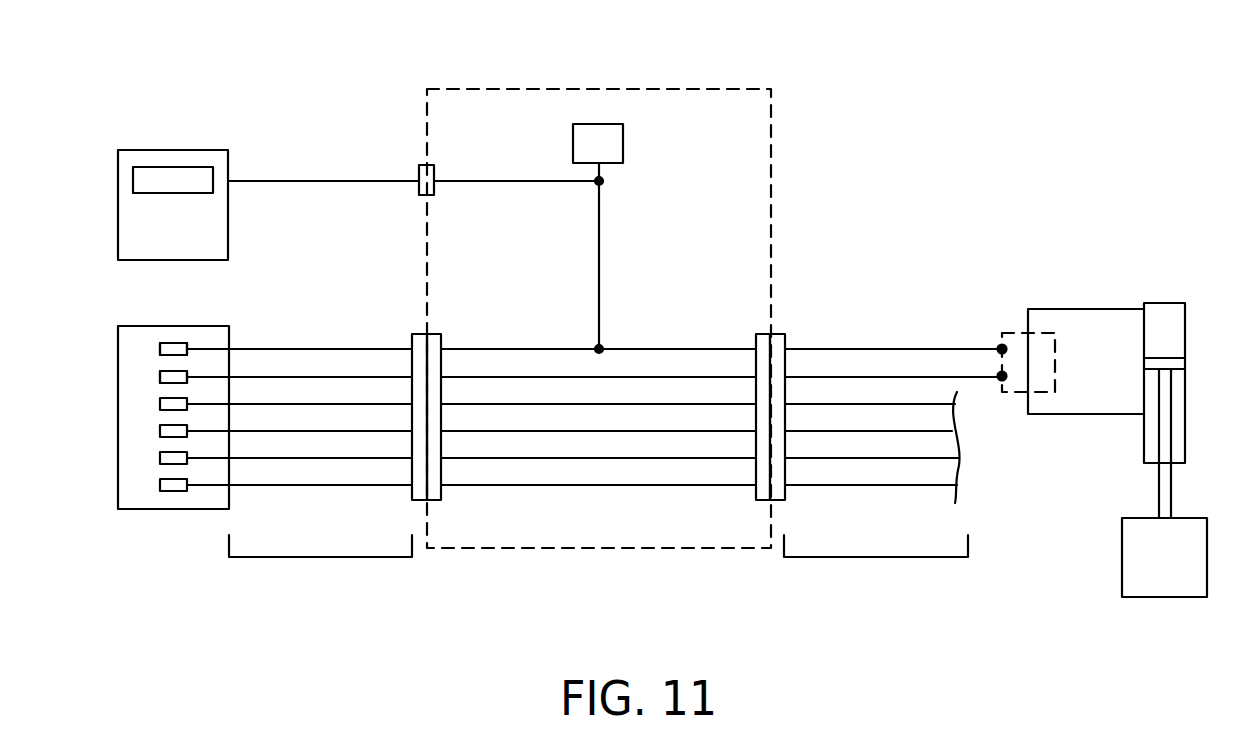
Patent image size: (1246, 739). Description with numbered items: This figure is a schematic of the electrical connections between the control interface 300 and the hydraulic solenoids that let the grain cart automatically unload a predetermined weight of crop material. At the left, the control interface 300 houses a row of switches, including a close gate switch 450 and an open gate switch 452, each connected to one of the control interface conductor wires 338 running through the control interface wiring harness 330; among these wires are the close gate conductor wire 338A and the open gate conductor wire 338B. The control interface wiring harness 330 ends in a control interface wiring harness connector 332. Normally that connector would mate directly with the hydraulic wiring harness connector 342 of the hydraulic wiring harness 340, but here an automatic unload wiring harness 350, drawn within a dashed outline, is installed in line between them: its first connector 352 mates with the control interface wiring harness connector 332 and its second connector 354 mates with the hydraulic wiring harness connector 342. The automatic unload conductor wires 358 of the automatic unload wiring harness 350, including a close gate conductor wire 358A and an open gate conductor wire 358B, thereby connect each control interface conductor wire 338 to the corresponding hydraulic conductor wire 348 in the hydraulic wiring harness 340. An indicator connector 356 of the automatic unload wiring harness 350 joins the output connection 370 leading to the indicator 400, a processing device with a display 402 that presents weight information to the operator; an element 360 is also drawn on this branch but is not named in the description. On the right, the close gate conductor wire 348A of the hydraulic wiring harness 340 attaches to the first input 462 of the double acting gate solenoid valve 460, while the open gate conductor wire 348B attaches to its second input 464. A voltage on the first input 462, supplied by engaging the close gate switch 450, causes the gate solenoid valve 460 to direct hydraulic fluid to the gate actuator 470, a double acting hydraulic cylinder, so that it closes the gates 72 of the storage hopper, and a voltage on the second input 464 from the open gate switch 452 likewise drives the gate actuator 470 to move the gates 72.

The gates 72 is at (1163, 577).
The control interface 300 is at (150, 510).
The control interface wiring harness 330 is at (318, 557).
The control interface wiring harness connector 332 is at (412, 493).
The control interface conductor wires 338 is at (280, 450).
The close gate conductor wire 338A is at (268, 346).
The open gate conductor wire 338B is at (349, 376).
The hydraulic wiring harness 340 is at (875, 557).
The hydraulic wiring harness connector 342 is at (785, 493).
The hydraulic conductor wires 348 is at (910, 447).
The close gate conductor wire 348A is at (832, 349).
The open gate conductor wire 348B is at (975, 378).
The automatic unload wiring harness 350 is at (563, 548).
The first connector 352 is at (441, 493).
The second connector 354 is at (756, 493).
The indicator connector 356 is at (478, 178).
The automatic unload conductor wires 358 is at (615, 445).
The close gate conductor wire 358A is at (637, 346).
The open gate conductor wire 358B is at (694, 377).
The sensor 360 is at (609, 124).
The output connection 370 is at (346, 180).
The indicator 400 is at (229, 162).
The display 402 is at (165, 180).
The close gate switch 450 is at (160, 345).
The open gate switch 452 is at (160, 375).
The double acting gate solenoid valve 460 is at (1047, 333).
The first input 462 is at (1002, 349).
The second input 464 is at (1002, 376).
The gate actuator 470 is at (1185, 325).